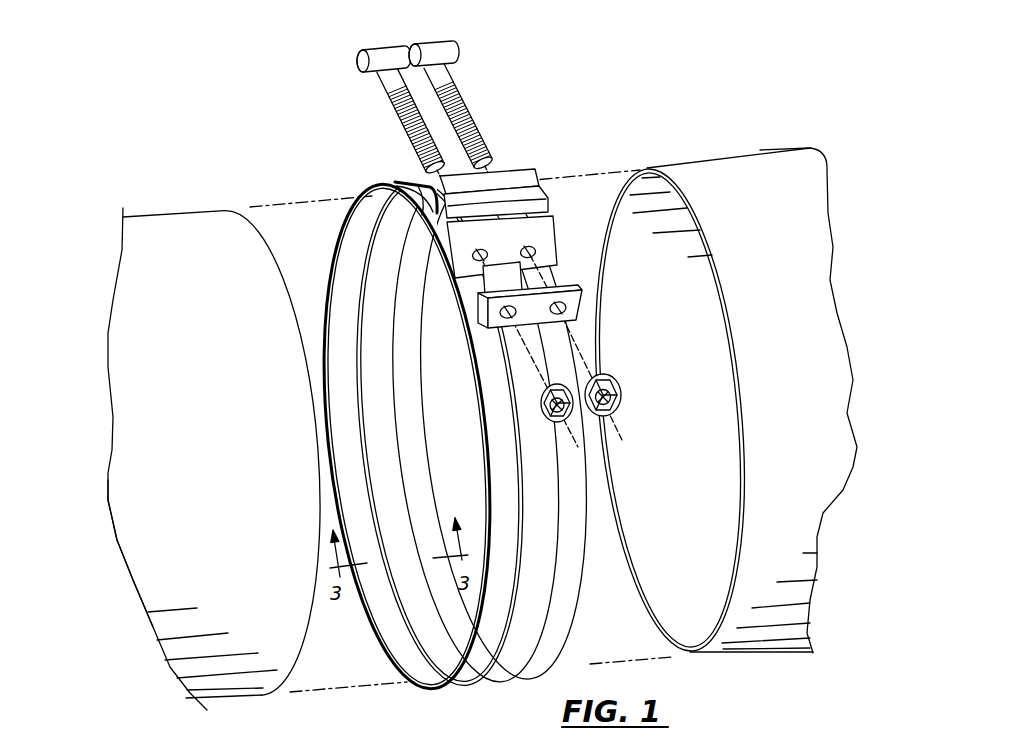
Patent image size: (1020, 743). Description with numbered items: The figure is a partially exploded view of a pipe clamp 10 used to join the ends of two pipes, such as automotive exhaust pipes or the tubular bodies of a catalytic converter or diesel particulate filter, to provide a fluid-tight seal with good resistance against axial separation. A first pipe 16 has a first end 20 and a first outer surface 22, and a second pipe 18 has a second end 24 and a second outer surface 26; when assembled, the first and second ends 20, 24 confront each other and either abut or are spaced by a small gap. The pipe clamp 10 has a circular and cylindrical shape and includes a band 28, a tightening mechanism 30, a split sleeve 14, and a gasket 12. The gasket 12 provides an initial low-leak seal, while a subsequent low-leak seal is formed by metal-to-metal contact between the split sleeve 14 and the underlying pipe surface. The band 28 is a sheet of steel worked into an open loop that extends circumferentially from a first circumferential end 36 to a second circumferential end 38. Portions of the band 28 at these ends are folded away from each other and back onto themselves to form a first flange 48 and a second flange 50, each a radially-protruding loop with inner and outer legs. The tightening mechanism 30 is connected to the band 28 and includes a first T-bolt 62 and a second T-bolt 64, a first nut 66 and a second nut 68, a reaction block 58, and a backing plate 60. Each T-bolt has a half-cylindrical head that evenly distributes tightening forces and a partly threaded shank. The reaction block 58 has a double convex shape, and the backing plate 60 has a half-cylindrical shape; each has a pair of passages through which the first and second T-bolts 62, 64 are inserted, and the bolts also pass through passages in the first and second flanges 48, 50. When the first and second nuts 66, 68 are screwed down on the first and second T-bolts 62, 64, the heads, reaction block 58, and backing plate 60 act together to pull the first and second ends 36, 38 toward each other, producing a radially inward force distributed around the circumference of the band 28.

The pipe clamp 10 is at (477, 369).
The gasket 12 is at (400, 384).
The split sleeve 14 is at (430, 442).
The first pipe 16 is at (150, 211).
The second pipe 18 is at (754, 156).
The first end 20 is at (239, 232).
The first outer surface 22 is at (162, 550).
The second end 24 is at (705, 176).
The second outer surface 26 is at (792, 180).
The band 28 is at (580, 583).
The tightening mechanism 30 is at (486, 249).
The first circumferential end 36 is at (403, 199).
The second circumferential end 38 is at (550, 274).
The first flange 48 is at (519, 168).
The second flange 50 is at (538, 227).
The reaction block 58 is at (527, 198).
The backing plate 60 is at (528, 308).
The first T-bolt 62 is at (383, 76).
The second T-bolt 64 is at (447, 72).
The first nut 66 is at (546, 393).
The second nut 68 is at (604, 378).